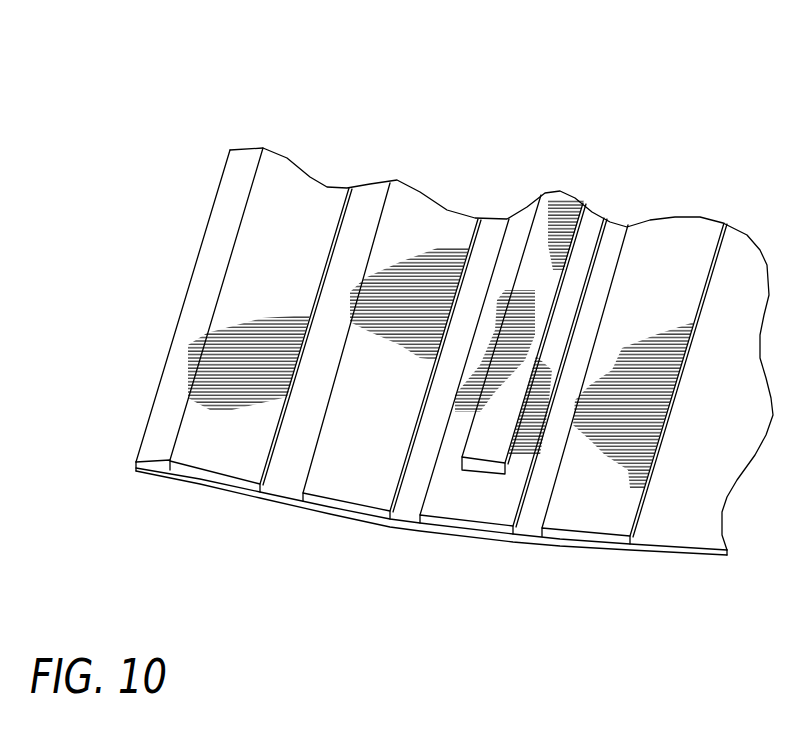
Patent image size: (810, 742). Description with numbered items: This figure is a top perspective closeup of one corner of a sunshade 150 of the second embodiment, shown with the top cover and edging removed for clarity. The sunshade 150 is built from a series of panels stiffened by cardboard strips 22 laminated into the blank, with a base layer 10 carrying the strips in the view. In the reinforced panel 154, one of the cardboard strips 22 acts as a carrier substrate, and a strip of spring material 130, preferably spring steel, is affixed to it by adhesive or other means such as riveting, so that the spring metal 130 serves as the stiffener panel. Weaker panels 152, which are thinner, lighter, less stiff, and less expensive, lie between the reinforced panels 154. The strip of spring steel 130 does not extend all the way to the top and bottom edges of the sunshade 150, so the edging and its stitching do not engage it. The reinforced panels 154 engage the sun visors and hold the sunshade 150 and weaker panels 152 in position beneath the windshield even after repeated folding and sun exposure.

The base plate 10 is at (693, 520).
The cardboard strip 22 is at (218, 448).
The strip of spring material 130 is at (543, 220).
The sunshade 150 is at (372, 135).
The weaker panel 152 is at (447, 232).
The reinforced panel 154 is at (592, 231).